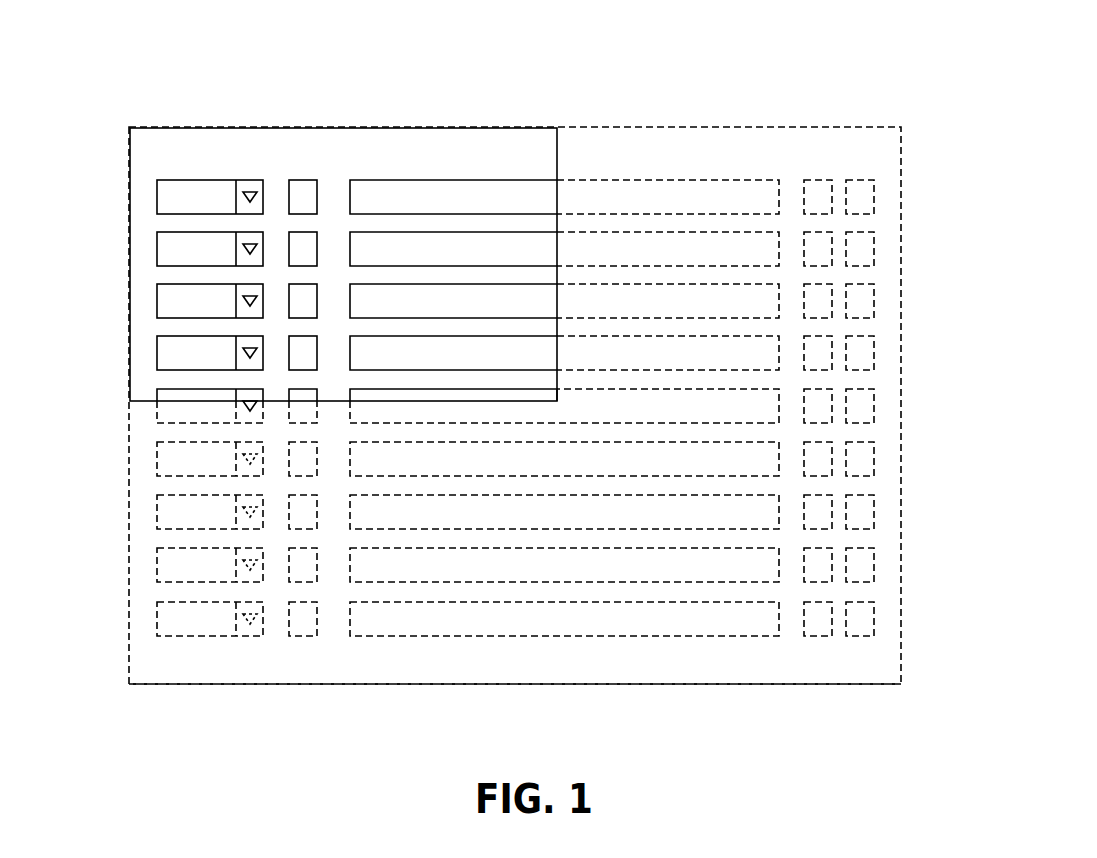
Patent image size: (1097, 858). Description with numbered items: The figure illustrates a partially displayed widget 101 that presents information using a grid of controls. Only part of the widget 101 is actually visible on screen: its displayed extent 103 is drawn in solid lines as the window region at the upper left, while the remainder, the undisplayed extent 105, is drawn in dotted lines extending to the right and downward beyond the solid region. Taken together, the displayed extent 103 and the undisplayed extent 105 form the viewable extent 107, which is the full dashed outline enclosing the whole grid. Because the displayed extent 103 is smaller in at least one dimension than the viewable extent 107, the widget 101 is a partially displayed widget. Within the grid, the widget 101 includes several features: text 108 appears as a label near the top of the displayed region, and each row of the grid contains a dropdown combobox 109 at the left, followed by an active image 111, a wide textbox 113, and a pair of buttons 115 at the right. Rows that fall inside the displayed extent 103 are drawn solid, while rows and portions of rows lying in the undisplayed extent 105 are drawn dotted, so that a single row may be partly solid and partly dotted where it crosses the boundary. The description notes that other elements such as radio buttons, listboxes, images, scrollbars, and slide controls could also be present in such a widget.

The widget 101 is at (699, 58).
The displayed extent 103 is at (430, 150).
The undisplayed extent 105 is at (742, 650).
The viewable extent 107 is at (870, 684).
The text 108 is at (140, 140).
The dropdown combobox 109 is at (157, 195).
The active image 111 is at (300, 178).
The textbox 113 is at (528, 178).
The buttons 115 is at (815, 178).